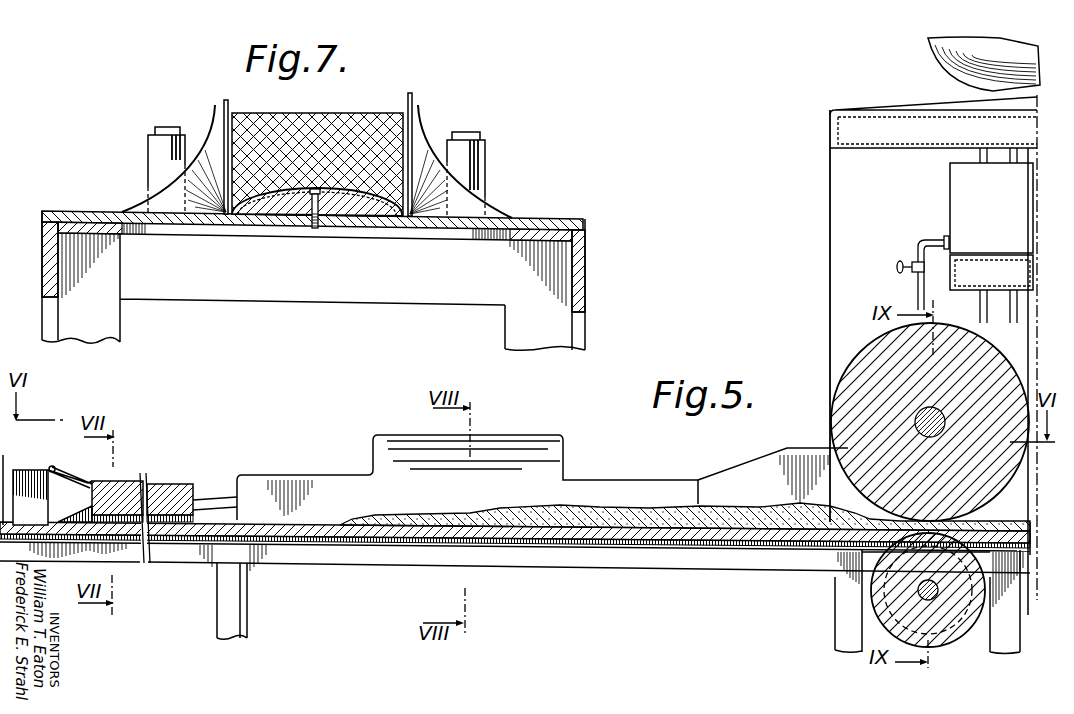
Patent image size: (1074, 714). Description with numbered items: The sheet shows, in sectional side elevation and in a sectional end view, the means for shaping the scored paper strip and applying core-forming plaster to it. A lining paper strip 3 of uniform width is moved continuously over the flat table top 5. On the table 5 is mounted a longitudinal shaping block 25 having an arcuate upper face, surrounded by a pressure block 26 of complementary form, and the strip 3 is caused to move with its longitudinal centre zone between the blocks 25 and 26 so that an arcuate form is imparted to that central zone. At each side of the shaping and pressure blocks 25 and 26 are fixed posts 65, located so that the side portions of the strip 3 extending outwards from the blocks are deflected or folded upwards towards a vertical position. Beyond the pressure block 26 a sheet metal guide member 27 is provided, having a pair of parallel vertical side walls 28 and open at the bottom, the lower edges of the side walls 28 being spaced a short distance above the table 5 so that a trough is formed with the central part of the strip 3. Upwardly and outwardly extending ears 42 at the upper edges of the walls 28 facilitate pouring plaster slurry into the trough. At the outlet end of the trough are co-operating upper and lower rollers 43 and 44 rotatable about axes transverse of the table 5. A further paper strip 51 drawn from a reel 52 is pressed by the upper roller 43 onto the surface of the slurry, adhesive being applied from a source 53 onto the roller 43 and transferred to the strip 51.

In FIG. 7, the lining paper 3 is at (316, 188).
In FIG. 7, the table top 5 is at (283, 225).
In FIG. 5, the table top 5 is at (198, 540).
In FIG. 7, the shaping block 25 is at (343, 209).
In FIG. 7, the pressure block 26 is at (373, 125).
In FIG. 5, the pressure block 26 is at (128, 496).
In FIG. 5, the guide member 27 is at (336, 488).
In FIG. 5, the side walls 28 is at (598, 492).
In FIG. 5, the ears 42 is at (522, 438).
In FIG. 5, the upper roller 43 is at (848, 365).
In FIG. 5, the lower roller 44 is at (968, 638).
In FIG. 5, the further paper strip 51 is at (830, 249).
In FIG. 5, the reel 52 is at (947, 55).
In FIG. 5, the adhesive source 53 is at (967, 193).
In FIG. 7, the fixed posts 65 is at (155, 155).
In FIG. 5, the fixed posts 65 is at (176, 520).